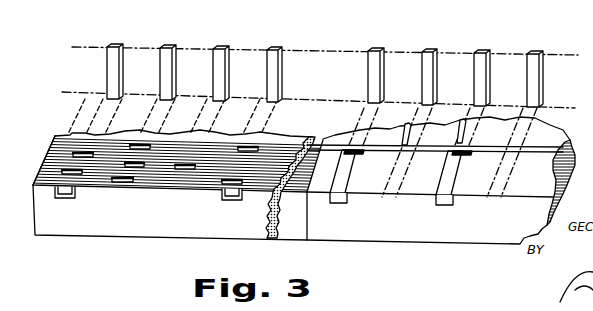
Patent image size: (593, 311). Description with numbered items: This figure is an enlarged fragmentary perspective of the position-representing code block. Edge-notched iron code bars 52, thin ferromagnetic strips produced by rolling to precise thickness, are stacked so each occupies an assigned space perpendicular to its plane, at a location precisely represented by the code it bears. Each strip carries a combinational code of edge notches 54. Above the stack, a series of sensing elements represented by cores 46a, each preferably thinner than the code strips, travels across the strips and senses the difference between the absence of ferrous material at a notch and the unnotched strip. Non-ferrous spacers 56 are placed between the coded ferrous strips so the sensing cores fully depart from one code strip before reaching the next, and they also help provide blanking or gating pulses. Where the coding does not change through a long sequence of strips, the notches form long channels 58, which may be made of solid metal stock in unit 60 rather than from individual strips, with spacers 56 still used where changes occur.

The sensing cores 46a is at (217, 47).
The edge-notched iron code bars 52 is at (283, 238).
The edge notches 54 is at (73, 197).
The non-ferrous spacers 56 is at (562, 170).
The long channels 58 is at (400, 148).
The solid metal unit 60 is at (381, 240).